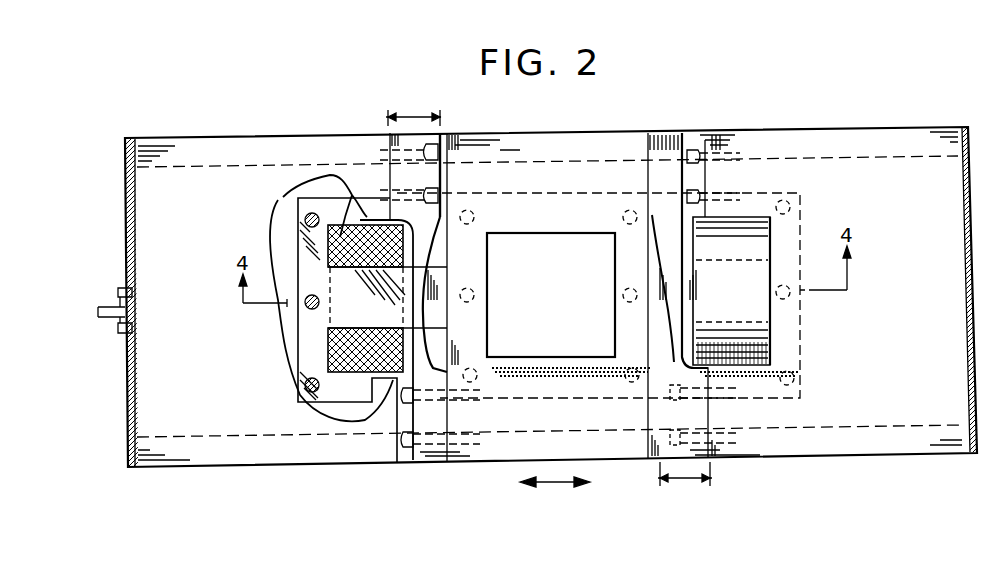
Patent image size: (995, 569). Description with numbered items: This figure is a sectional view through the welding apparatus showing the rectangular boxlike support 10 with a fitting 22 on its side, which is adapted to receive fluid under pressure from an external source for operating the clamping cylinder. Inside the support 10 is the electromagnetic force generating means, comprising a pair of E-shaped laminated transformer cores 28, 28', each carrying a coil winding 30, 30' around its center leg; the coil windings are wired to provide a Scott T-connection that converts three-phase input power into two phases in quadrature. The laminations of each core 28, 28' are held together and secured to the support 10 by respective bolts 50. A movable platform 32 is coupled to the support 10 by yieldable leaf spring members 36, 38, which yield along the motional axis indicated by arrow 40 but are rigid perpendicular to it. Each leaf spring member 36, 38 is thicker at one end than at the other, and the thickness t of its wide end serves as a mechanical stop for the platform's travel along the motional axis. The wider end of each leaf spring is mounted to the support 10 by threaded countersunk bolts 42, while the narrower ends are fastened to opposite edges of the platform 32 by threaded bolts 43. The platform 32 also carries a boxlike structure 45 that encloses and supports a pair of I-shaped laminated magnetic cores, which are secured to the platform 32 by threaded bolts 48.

The support 10 is at (188, 383).
The fitting 22 is at (119, 335).
The E-shaped laminated transformer core 28 is at (372, 330).
The E-shaped laminated transformer core 28' is at (775, 291).
The coil winding 30 is at (336, 296).
The coil winding 30' is at (768, 353).
The movable platform 32 is at (545, 133).
The leaf spring member 36 is at (432, 452).
The leaf spring member 38 is at (664, 140).
The arrow 40 is at (557, 483).
The threaded countersunk bolts 42 is at (438, 128).
The threaded bolts 43 is at (697, 150).
The boxlike structure 45 is at (553, 402).
The threaded bolts 48 is at (477, 217).
The bolts 50 is at (303, 309).